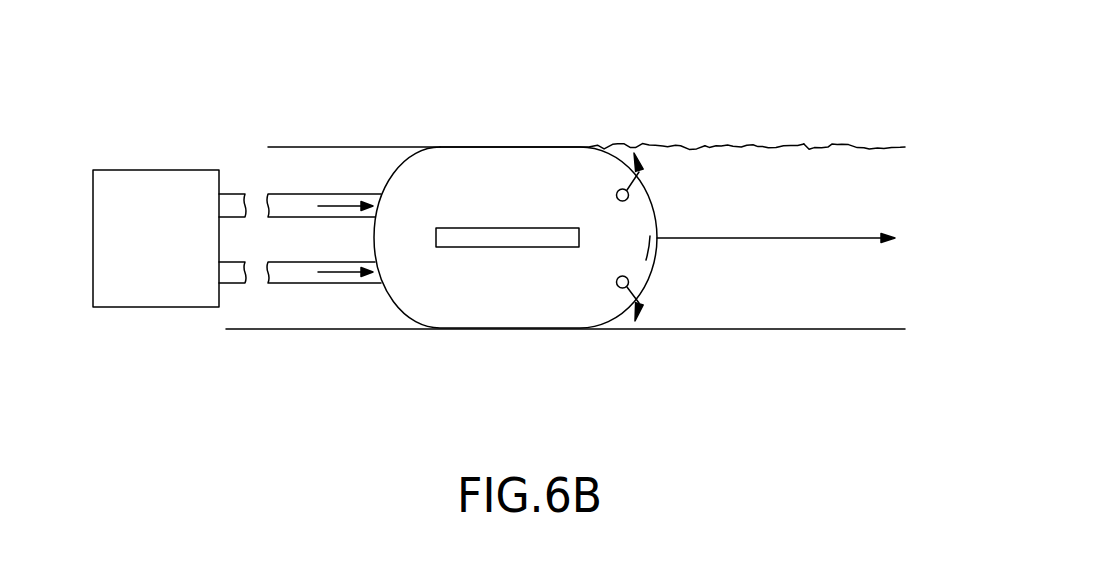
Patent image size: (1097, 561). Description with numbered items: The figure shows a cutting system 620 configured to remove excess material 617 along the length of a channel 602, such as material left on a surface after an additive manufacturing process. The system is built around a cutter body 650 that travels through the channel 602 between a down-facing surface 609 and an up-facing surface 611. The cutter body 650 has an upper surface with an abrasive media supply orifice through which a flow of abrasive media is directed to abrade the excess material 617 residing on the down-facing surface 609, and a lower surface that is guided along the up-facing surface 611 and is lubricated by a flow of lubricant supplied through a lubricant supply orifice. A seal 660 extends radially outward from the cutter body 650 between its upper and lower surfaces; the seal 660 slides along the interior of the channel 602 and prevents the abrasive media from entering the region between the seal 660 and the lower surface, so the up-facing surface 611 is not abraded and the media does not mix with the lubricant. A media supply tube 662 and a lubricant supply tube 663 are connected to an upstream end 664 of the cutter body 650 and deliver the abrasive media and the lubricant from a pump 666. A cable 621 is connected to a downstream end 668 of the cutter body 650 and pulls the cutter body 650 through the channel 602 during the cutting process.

The channel 602 is at (799, 104).
The down-facing surface 609 is at (847, 147).
The up-facing surface 611 is at (820, 329).
The excess material 617 is at (733, 147).
The cutting system 620 is at (352, 63).
The cable 621 is at (822, 238).
The cutter body 650 is at (558, 168).
The seal 660 is at (485, 240).
The media supply tube 662 is at (286, 205).
The lubricant supply tube 663 is at (292, 273).
The upstream end 664 is at (385, 178).
The pump 666 is at (200, 195).
The downstream end 668 is at (650, 250).